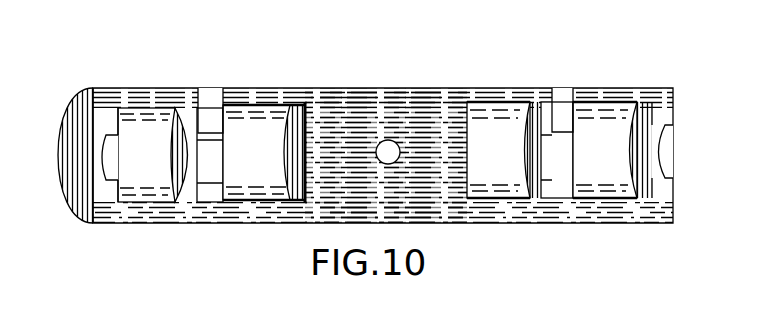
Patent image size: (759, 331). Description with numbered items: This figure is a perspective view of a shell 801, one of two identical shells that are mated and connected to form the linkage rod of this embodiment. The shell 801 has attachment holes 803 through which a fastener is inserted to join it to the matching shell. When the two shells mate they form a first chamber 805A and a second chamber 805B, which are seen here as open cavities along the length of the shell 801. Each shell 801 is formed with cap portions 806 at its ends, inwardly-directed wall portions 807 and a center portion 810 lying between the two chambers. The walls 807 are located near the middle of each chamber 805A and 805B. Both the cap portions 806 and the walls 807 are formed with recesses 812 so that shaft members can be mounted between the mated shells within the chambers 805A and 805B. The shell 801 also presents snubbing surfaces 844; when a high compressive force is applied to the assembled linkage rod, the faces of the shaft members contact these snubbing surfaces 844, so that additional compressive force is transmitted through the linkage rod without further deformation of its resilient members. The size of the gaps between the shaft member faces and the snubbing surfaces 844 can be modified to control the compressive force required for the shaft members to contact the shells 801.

The shell 801 is at (390, 96).
The attachment hole 803 is at (395, 142).
The first chamber 805A is at (150, 185).
The second chamber 805B is at (502, 168).
The cap portion 806 is at (145, 113).
The inwardly-directed wall portion 807 is at (216, 117).
The center portion 810 is at (452, 179).
The recess 812 is at (180, 165).
The snubbing surface 844 is at (282, 174).